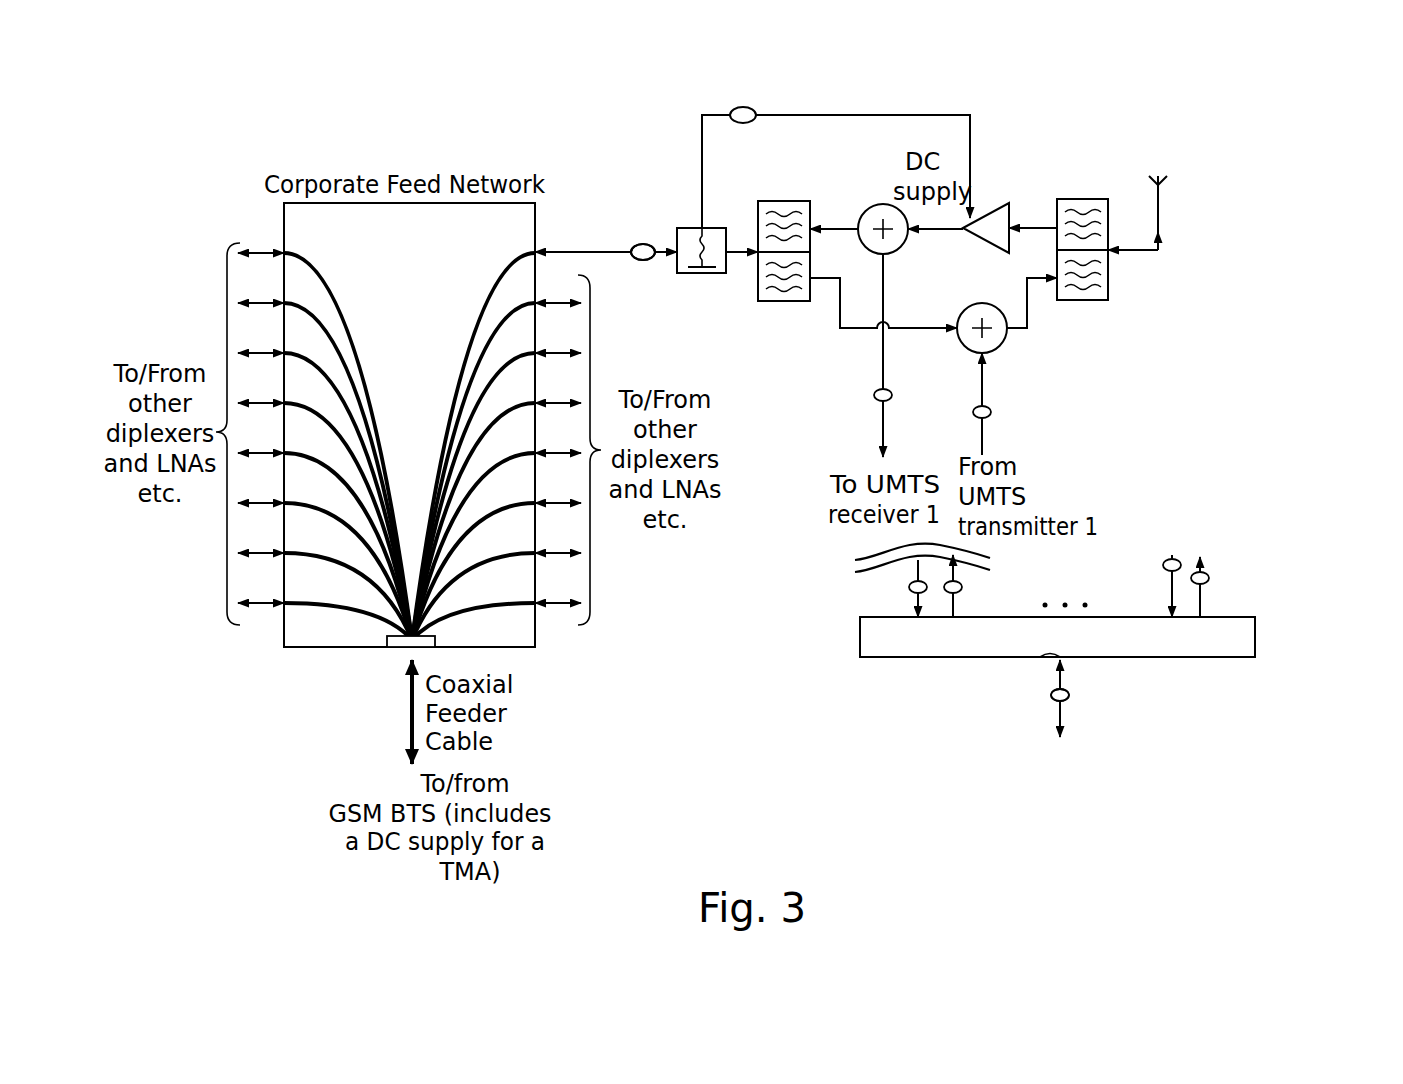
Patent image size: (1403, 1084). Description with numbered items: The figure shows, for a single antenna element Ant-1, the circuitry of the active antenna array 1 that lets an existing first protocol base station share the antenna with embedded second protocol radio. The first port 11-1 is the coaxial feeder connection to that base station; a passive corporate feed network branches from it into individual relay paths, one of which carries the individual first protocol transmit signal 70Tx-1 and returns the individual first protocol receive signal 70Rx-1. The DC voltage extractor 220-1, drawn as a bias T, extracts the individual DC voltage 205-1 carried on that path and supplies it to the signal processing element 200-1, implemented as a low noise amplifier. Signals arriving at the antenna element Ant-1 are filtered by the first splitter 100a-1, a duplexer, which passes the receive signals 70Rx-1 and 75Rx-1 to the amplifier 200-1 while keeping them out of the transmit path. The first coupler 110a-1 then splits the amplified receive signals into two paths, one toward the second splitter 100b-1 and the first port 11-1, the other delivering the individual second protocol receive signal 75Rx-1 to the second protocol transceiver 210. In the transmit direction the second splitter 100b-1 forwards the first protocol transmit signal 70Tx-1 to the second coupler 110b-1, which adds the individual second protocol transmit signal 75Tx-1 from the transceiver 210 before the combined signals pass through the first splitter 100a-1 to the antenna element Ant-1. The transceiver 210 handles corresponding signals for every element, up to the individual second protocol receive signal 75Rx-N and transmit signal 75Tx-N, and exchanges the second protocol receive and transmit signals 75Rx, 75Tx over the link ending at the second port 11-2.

The active antenna array 1 is at (1064, 780).
The first port 11-1 is at (383, 647).
The second port 11-2 is at (1048, 657).
The individual first protocol receive signal 70Rx-1 is at (640, 244).
The individual first protocol transmit signal 70Tx-1 is at (643, 252).
The second protocol receive signals 75Rx is at (1069, 694).
The second protocol transmit signals 75Tx is at (1060, 695).
The individual second protocol receive signal 75Rx-1 is at (875, 398).
The individual second protocol transmit signal 75Tx-1 is at (992, 412).
The individual second protocol receive signal 75Rx-N is at (1163, 562).
The individual second protocol transmit signal 75Tx-N is at (1211, 578).
The first splitter 100a-1 is at (1110, 268).
The second splitter 100b-1 is at (758, 290).
The first coupler 110a-1 is at (870, 210).
The second coupler 110b-1 is at (999, 351).
The signal processing element 200-1 is at (976, 222).
The individual DC voltage 205-1 is at (748, 108).
The second protocol transceiver 210 is at (1057, 637).
The DC voltage extractor 220-1 is at (706, 232).
The antenna element Ant-1 is at (1153, 198).